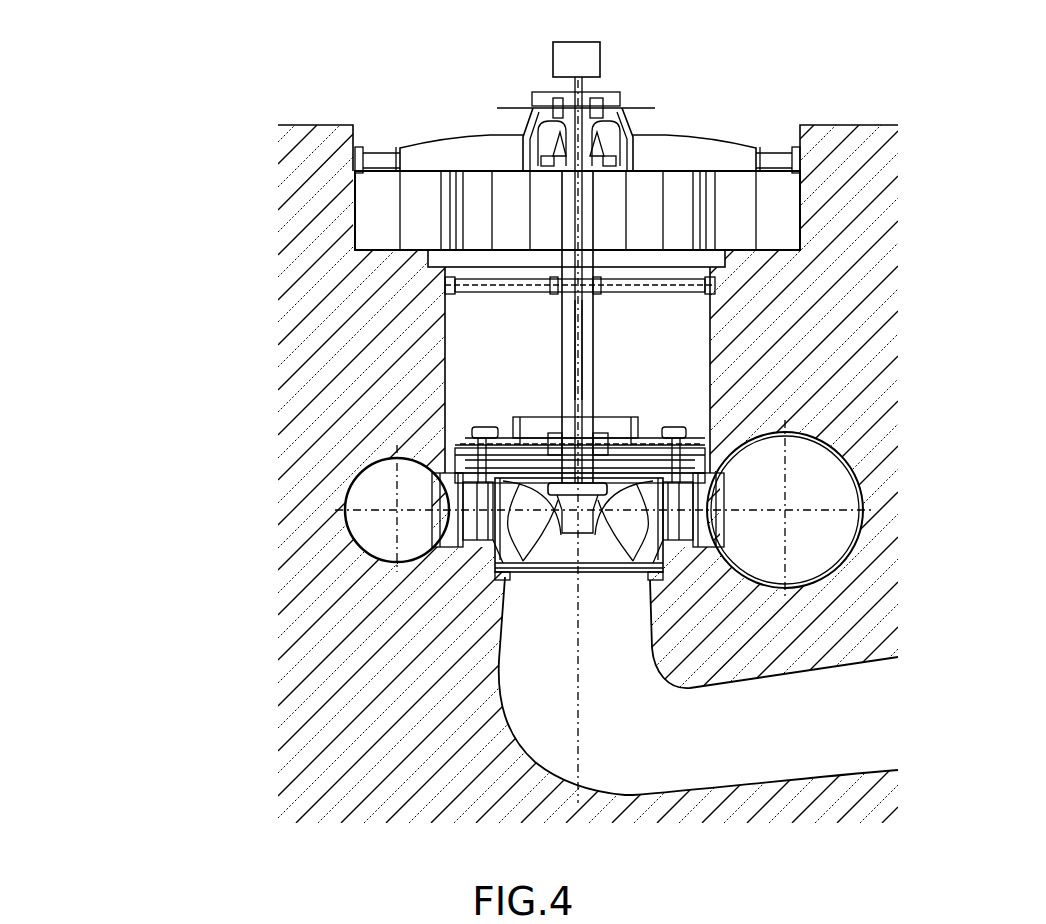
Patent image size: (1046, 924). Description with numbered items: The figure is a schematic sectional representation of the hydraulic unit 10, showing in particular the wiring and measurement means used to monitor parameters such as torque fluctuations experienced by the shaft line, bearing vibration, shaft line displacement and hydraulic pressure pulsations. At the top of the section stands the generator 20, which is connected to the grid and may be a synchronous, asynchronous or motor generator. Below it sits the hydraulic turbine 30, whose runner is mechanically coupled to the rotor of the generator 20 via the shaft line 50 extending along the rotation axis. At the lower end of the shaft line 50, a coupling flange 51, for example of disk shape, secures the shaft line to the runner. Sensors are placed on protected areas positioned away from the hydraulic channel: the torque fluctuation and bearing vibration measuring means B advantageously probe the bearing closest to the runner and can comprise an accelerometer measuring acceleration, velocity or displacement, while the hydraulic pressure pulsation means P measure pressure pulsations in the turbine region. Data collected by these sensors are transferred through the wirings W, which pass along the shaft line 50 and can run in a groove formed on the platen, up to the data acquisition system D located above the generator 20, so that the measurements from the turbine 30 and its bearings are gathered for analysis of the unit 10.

The hydraulic unit 10 is at (132, 294).
The generator 20 is at (207, 110).
The hydraulic turbine 30 is at (207, 408).
The shaft line 50 is at (597, 323).
The wirings W is at (586, 351).
The coupling flange 51 is at (650, 482).
The torque fluctuation and bearing vibration measuring means B is at (541, 441).
The hydraulic pressure pulsation means P is at (545, 582).
The data acquisition system D is at (606, 44).